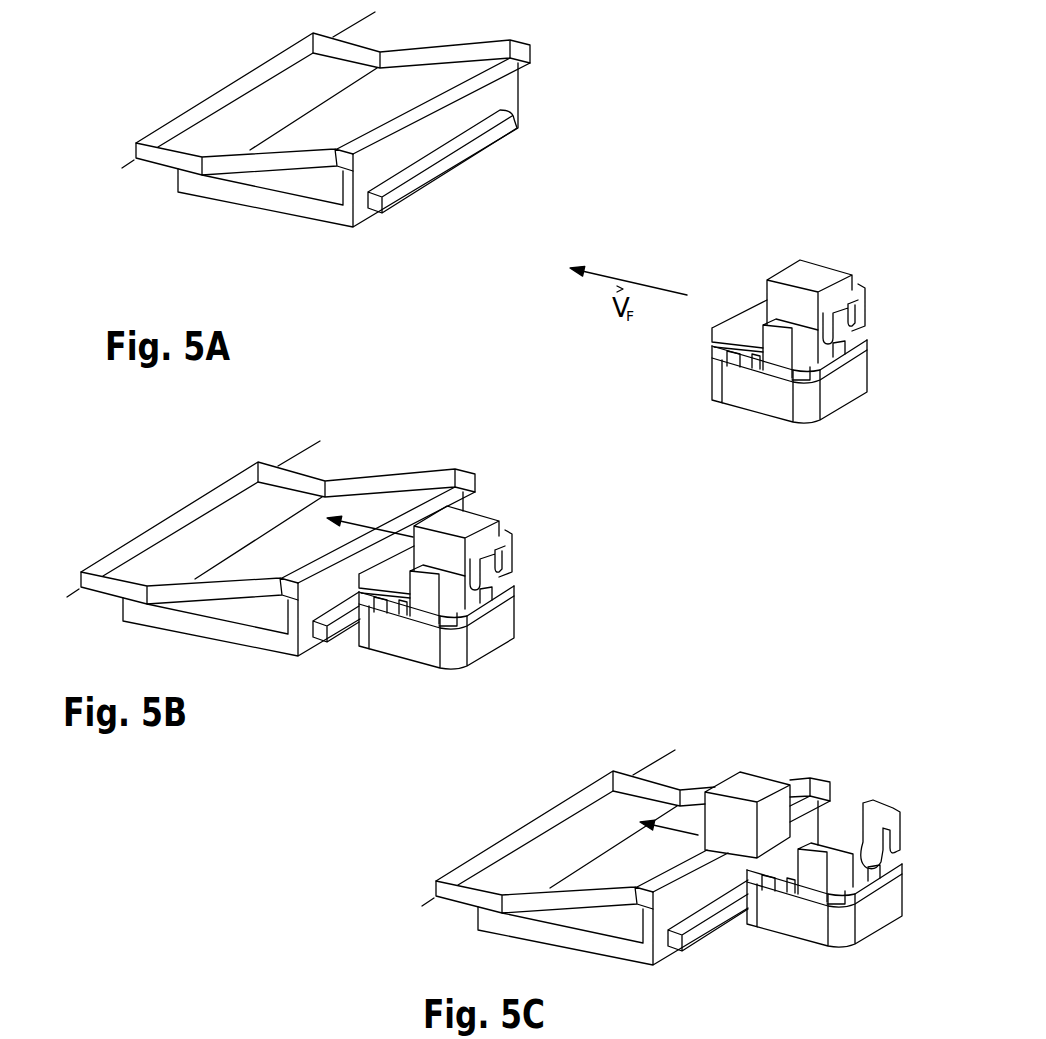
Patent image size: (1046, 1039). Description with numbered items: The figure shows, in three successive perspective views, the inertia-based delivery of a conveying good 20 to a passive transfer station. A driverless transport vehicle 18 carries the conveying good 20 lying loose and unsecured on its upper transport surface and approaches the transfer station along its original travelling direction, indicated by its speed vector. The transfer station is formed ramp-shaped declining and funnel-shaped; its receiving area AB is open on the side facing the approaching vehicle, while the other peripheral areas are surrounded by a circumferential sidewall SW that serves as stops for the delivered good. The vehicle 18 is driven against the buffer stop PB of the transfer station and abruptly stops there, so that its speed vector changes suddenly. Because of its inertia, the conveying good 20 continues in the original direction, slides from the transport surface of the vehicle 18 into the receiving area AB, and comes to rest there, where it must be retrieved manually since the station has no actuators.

In FIG. 5A, the receiving area AB is at (262, 111).
In FIG. 5A, the circumferential sidewall SW is at (158, 160).
In FIG. 5B, the circumferential sidewall SW is at (184, 622).
In FIG. 5A, the buffer stop PB is at (453, 170).
In FIG. 5A, the driverless transport vehicle 18 is at (853, 398).
In FIG. 5C, the driverless transport vehicle 18 is at (873, 930).
In FIG. 5A, the conveying good 20 is at (818, 262).
In FIG. 5C, the conveying good 20 is at (748, 772).